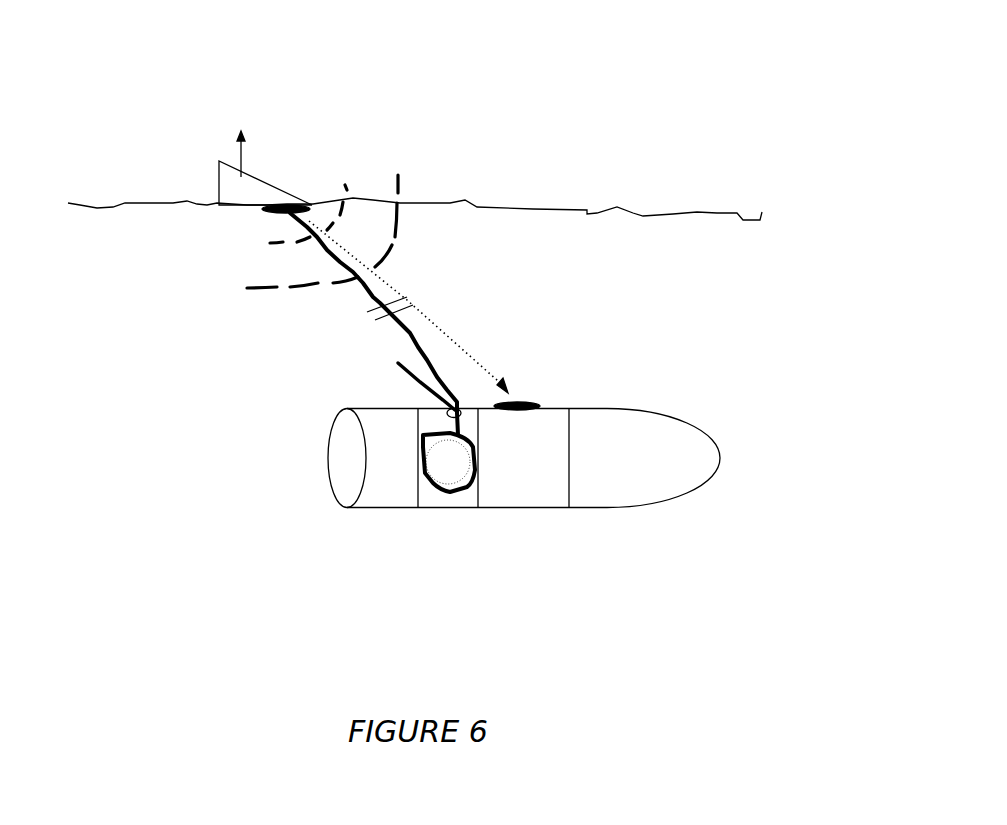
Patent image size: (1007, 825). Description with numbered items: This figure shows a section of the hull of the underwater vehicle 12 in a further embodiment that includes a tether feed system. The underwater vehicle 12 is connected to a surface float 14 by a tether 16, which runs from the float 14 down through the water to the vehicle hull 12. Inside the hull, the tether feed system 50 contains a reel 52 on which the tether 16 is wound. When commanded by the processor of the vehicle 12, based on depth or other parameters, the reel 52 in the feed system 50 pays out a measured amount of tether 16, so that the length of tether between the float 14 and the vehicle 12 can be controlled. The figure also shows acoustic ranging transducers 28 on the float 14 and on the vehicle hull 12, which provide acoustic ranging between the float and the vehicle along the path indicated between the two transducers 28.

The underwater vehicle 12 is at (687, 423).
The float 14 is at (262, 182).
The tether 16 is at (405, 328).
The acoustic ranging transducers 28 is at (277, 215).
The tether feed system 50 is at (500, 489).
The reel 52 is at (443, 462).